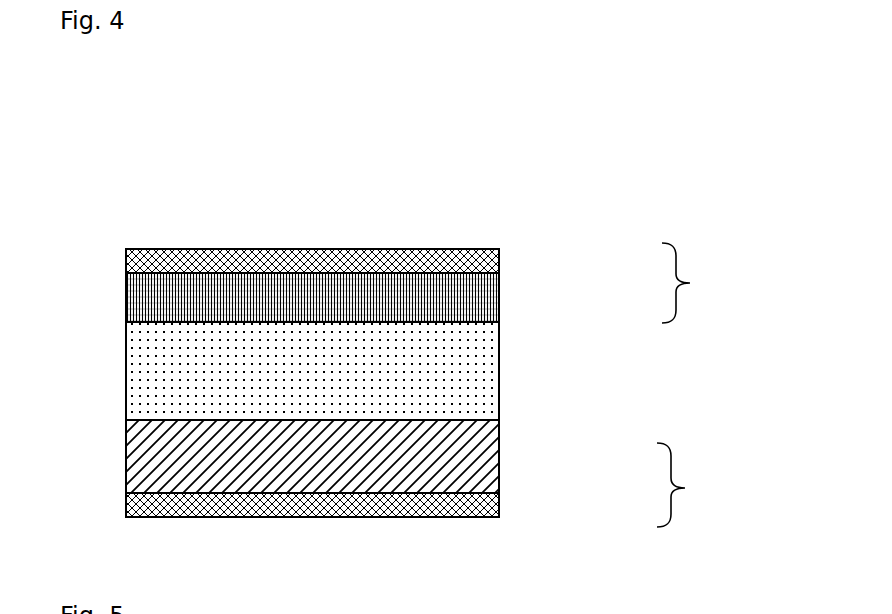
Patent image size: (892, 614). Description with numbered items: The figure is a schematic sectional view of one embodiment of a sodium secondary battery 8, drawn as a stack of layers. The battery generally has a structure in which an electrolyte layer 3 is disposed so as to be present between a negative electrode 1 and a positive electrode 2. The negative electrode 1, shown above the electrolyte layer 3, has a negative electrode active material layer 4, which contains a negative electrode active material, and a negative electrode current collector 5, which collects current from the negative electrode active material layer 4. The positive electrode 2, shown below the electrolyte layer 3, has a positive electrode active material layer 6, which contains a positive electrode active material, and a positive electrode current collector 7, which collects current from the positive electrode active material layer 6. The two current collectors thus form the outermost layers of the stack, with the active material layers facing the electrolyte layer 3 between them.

The sodium secondary battery 8 is at (537, 160).
The negative electrode 1 is at (686, 283).
The positive electrode 2 is at (682, 485).
The electrolyte layer 3 is at (488, 373).
The negative electrode active material layer 4 is at (488, 299).
The negative electrode current collector 5 is at (490, 262).
The positive electrode active material layer 6 is at (488, 465).
The positive electrode current collector 7 is at (488, 505).